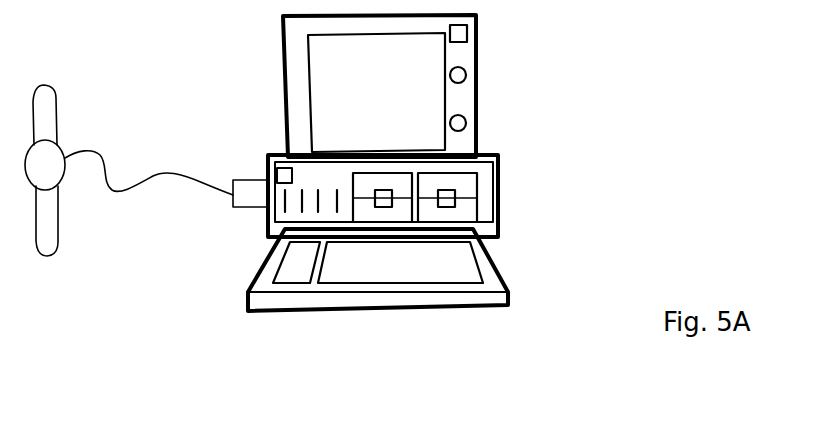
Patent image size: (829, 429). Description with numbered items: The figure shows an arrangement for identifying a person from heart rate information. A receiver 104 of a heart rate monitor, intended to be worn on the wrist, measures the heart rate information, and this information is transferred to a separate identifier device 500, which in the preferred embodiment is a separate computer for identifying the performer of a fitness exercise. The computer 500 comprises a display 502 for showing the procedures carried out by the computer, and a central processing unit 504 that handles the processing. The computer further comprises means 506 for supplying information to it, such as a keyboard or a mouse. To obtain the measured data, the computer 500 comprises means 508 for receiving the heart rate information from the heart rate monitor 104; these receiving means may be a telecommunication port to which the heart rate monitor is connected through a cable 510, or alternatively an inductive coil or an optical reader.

The receiver 104 is at (60, 148).
The identifier device 500 is at (590, 113).
The display 502 is at (477, 48).
The central processing unit 504 is at (500, 202).
The means for supplying information 506 is at (505, 286).
The means for receiving heart rate information 508 is at (240, 180).
The cable 510 is at (168, 174).